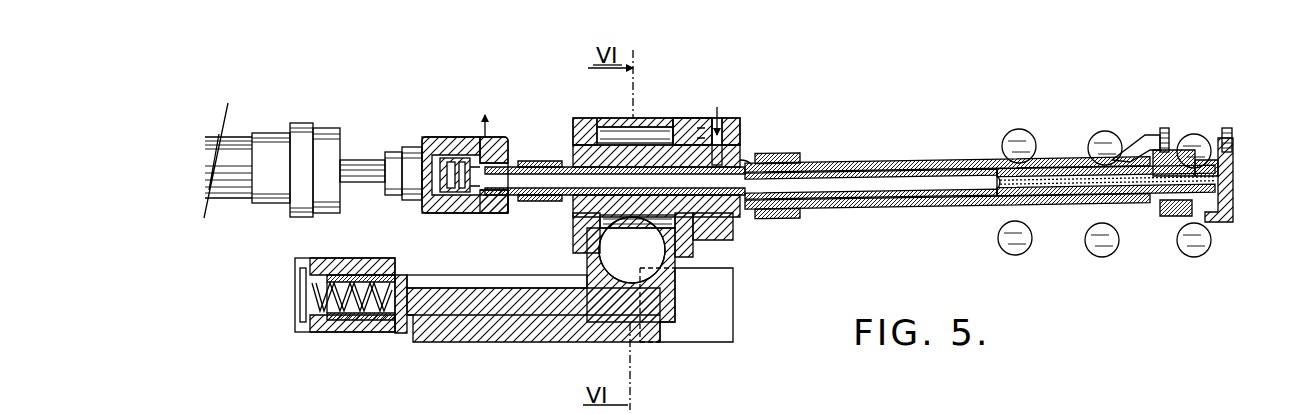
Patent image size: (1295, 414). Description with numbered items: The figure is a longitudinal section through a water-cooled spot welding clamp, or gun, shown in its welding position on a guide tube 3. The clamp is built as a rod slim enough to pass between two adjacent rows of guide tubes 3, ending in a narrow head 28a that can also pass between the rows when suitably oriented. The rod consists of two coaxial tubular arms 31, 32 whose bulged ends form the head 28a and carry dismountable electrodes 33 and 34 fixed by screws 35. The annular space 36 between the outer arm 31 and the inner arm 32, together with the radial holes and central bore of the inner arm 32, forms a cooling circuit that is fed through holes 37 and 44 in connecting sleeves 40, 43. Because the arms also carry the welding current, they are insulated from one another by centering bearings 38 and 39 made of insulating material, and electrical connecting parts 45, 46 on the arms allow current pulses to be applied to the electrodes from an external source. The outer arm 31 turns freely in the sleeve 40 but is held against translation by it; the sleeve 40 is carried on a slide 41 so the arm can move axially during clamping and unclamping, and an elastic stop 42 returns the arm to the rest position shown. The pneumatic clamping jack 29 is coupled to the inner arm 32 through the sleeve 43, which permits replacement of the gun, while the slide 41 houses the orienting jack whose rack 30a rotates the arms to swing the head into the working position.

The guide tube 3 is at (1100, 140).
The head 28a is at (1135, 128).
The pneumatic clamping jack 29 is at (243, 145).
The rack 30a is at (618, 268).
The outer tubular arm 31 is at (973, 162).
The inner tubular arm 32 is at (1002, 197).
The electrode 33 is at (1173, 150).
The electrode 34 is at (1224, 150).
The screw 35 is at (1163, 131).
The annular space 36 is at (888, 172).
The hole 37 is at (723, 117).
The centering bearing 38 is at (598, 160).
The centering bearing 39 is at (1177, 216).
The connecting sleeve 40 is at (693, 128).
The slide 41 is at (663, 276).
The elastic stop 42 is at (355, 330).
The connecting sleeve 43 is at (433, 148).
The hole 44 is at (483, 142).
The electrical connecting part 45 is at (777, 209).
The electrical connecting part 46 is at (553, 192).